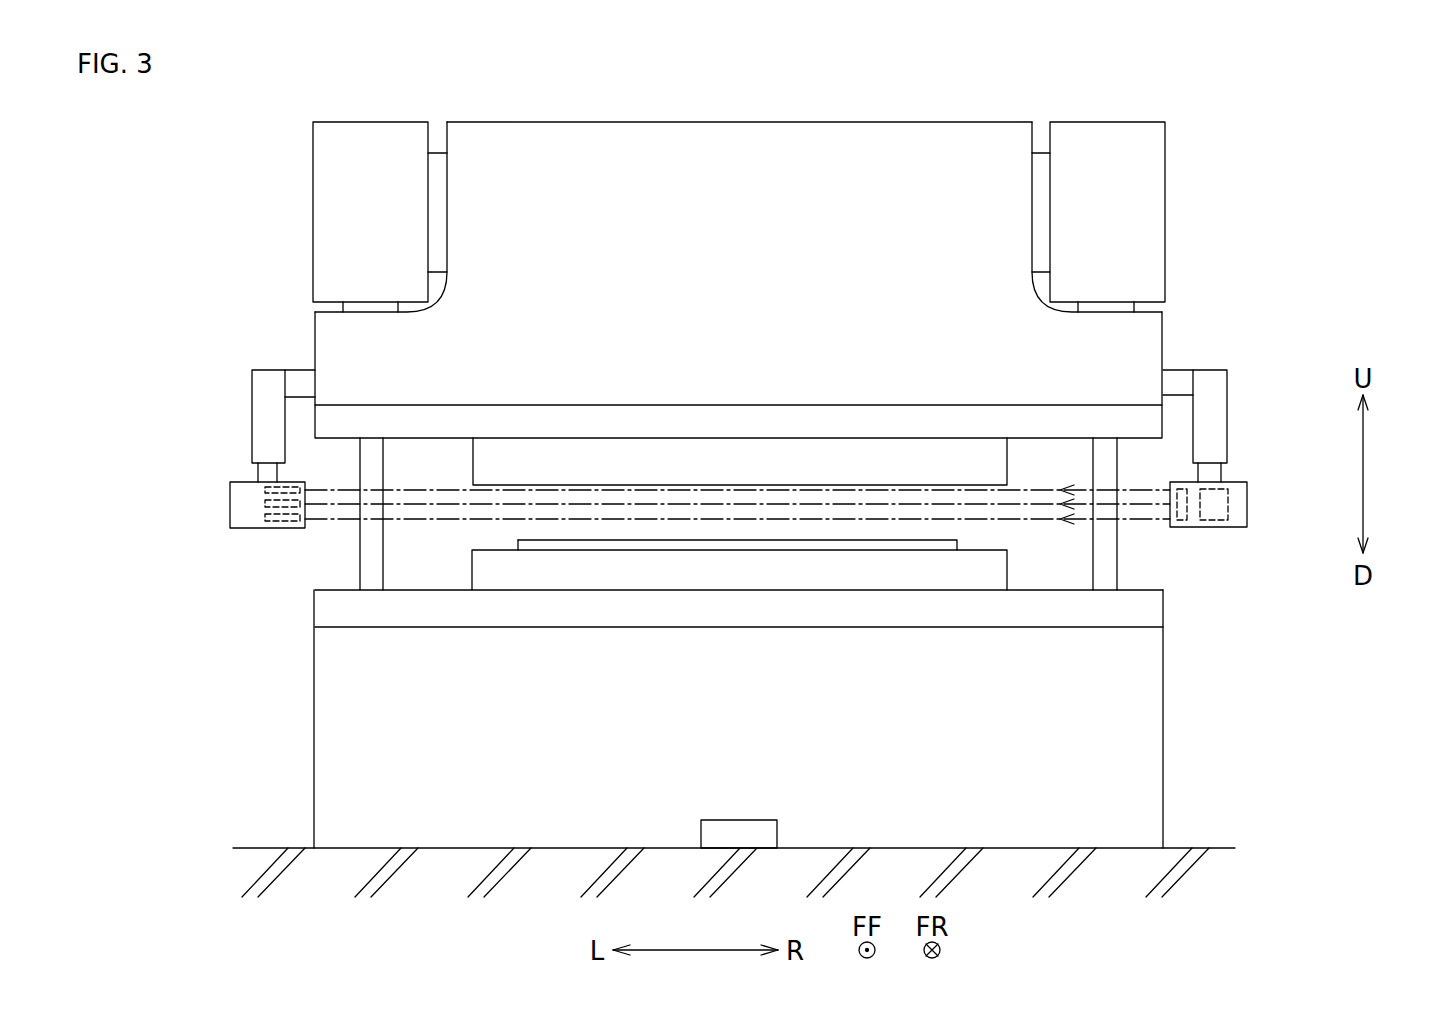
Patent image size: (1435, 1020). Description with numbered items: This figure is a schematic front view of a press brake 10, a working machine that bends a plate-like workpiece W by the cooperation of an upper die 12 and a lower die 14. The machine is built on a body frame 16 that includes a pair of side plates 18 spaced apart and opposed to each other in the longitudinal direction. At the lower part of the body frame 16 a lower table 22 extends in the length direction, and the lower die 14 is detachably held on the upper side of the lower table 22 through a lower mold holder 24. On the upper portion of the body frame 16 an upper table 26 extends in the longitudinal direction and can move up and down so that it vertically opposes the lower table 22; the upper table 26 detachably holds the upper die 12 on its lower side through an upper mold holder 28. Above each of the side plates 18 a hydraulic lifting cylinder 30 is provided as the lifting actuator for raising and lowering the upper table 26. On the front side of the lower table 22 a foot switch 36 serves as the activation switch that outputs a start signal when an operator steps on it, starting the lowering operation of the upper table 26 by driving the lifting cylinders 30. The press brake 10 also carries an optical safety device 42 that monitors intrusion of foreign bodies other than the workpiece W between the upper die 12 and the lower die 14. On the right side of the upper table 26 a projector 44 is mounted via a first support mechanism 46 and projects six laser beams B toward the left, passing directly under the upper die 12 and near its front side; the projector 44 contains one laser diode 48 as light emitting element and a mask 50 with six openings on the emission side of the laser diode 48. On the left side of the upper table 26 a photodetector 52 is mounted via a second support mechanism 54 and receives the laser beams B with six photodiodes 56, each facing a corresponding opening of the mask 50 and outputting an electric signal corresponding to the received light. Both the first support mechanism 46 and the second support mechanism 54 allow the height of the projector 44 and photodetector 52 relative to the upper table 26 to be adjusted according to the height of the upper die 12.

The press brake 10 is at (1312, 116).
The upper die 12 is at (826, 455).
The lower die 14 is at (773, 573).
The body frame 16 is at (1120, 542).
The side plates 18 is at (358, 568).
The lower table 22 is at (1150, 741).
The lower mold holder 24 is at (668, 620).
The upper table 26 is at (698, 128).
The upper mold holder 28 is at (670, 418).
The hydraulic lifting cylinder 30 is at (313, 208).
The foot switch 36 is at (777, 833).
The optical safety device 42 is at (1215, 355).
The projector 44 is at (1237, 498).
The first support mechanism 46 is at (1221, 413).
The laser diode 48 is at (1228, 488).
The mask 50 is at (1172, 480).
The photodetector 52 is at (230, 500).
The second support mechanism 54 is at (252, 442).
The photodiodes 56 is at (292, 484).
The laser beams B is at (420, 508).
The workpiece W is at (903, 545).